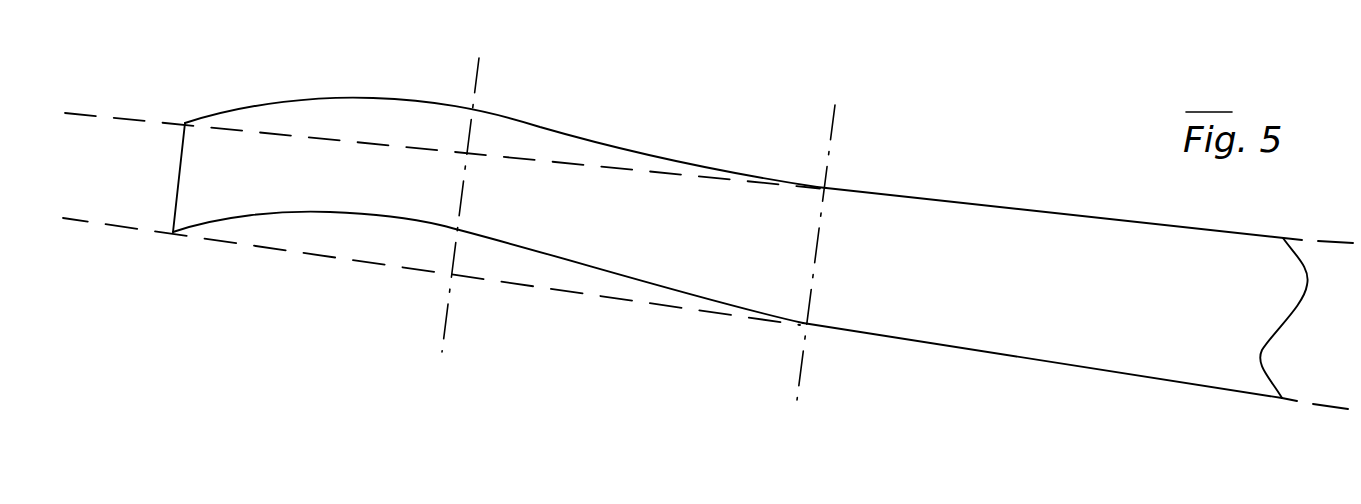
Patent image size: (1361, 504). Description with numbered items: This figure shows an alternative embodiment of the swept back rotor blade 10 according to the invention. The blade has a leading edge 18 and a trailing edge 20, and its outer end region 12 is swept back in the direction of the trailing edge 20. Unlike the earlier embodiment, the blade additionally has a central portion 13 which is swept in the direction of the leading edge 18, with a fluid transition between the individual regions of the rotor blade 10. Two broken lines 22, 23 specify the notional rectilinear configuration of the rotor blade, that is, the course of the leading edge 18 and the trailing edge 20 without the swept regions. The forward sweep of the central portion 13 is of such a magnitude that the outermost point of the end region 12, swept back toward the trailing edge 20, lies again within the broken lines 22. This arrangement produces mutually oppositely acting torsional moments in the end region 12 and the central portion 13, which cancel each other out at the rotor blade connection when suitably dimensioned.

The rotor blade 10 is at (982, 173).
The end region 12 is at (495, 186).
The central portion 13 is at (825, 125).
The leading edge 18 is at (398, 98).
The trailing edge 20 is at (365, 213).
The broken line 22 is at (125, 117).
The broken line 23 is at (125, 229).